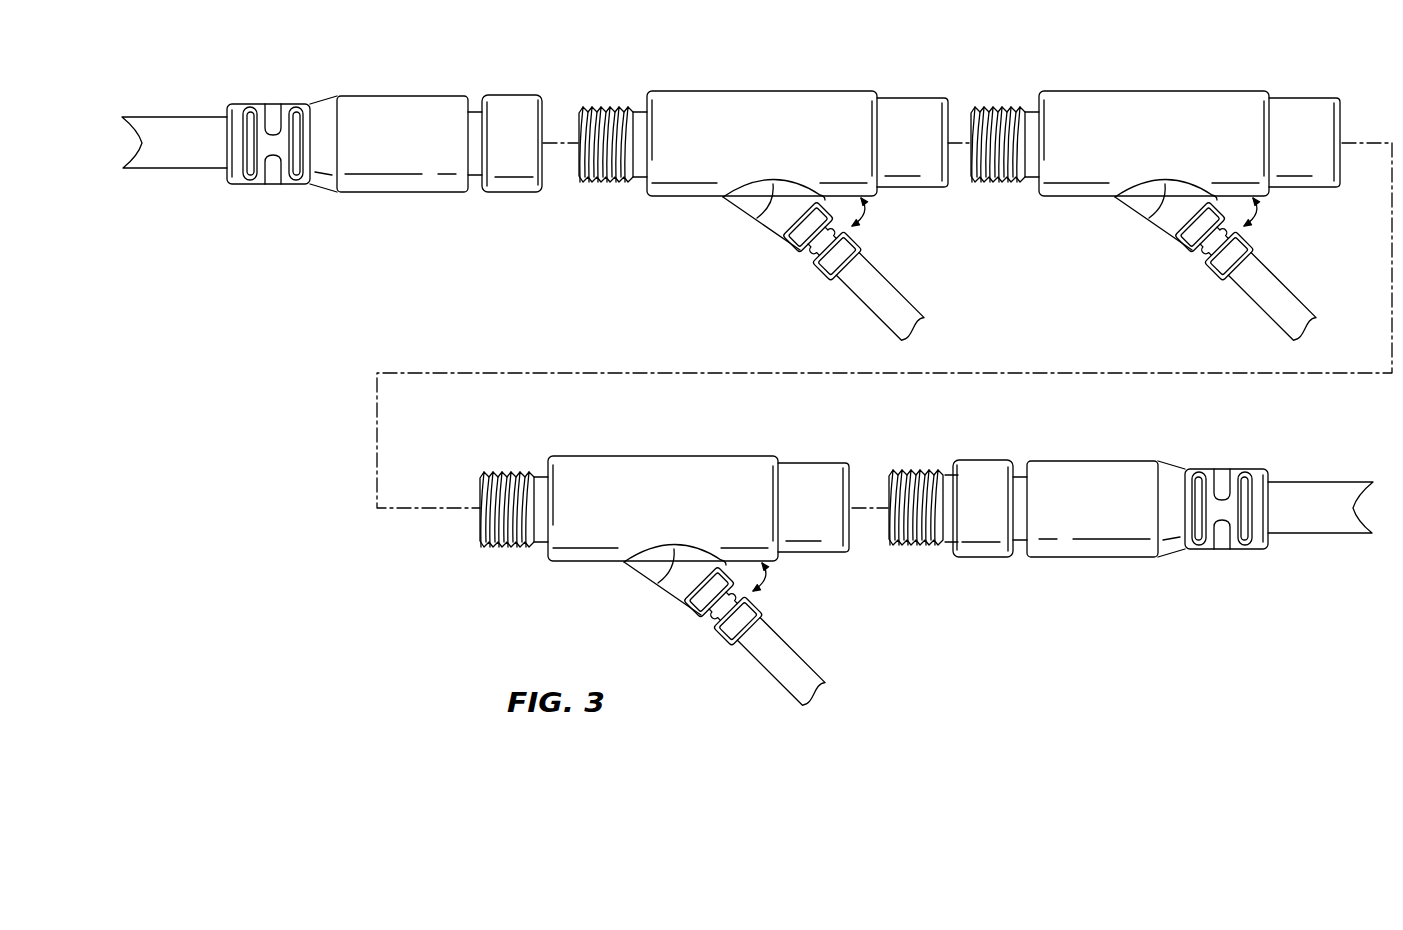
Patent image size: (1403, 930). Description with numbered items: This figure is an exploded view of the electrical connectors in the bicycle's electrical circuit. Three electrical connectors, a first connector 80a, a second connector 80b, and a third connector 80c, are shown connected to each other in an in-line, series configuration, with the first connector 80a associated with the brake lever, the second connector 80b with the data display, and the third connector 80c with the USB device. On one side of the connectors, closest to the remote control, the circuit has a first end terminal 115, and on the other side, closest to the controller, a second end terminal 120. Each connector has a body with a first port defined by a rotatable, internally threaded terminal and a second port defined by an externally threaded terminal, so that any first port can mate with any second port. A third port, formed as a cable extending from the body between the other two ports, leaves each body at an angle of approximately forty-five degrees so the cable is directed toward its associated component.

The first connector 80a is at (654, 552).
The second connector 80b is at (1145, 187).
The third connector 80c is at (753, 187).
The first end terminal 115 is at (916, 546).
The second end terminal 120 is at (508, 94).